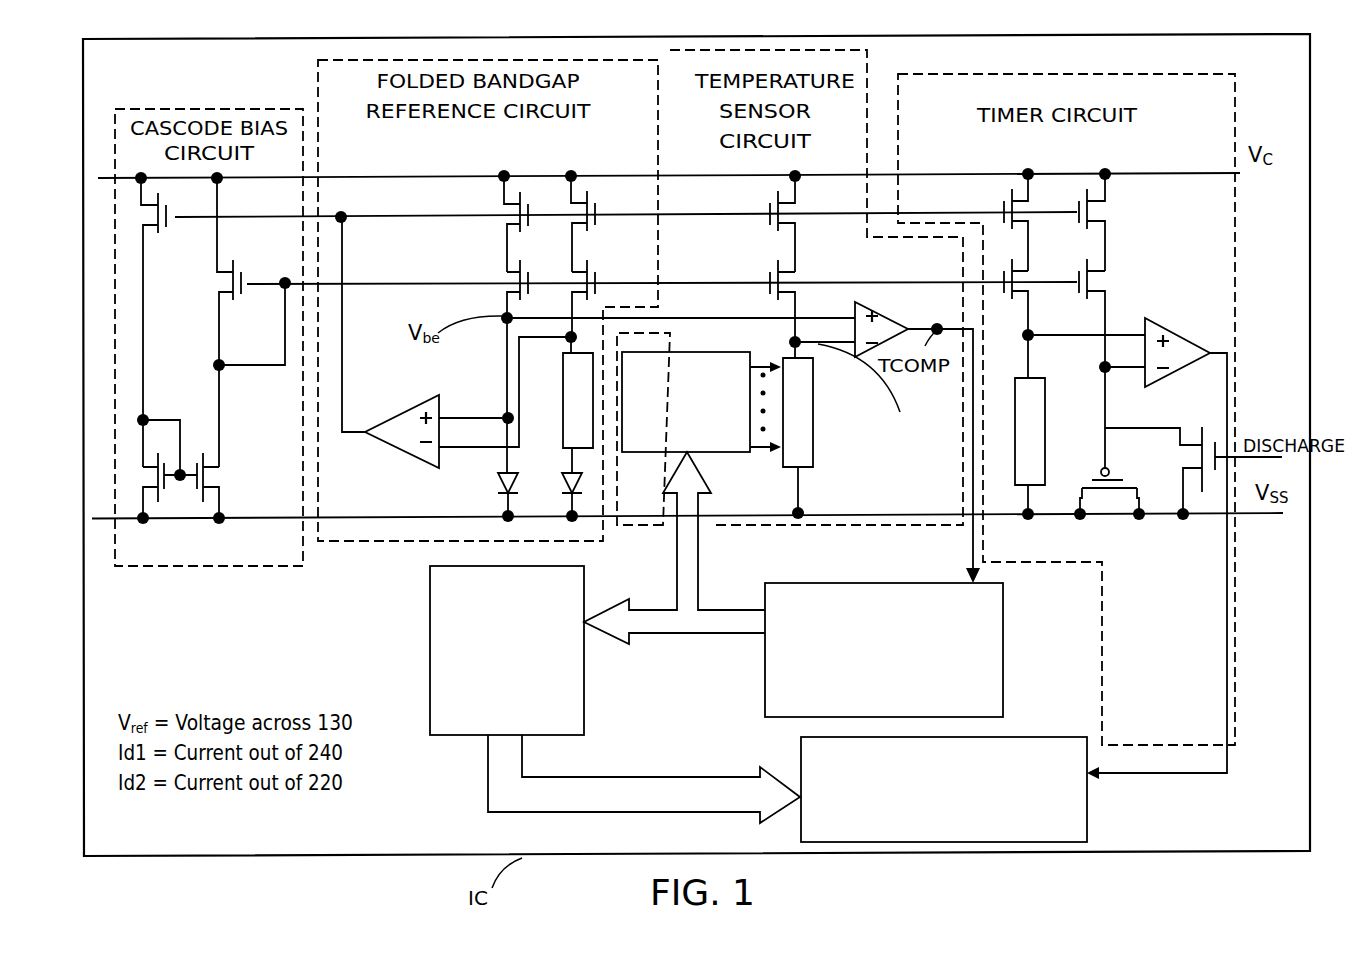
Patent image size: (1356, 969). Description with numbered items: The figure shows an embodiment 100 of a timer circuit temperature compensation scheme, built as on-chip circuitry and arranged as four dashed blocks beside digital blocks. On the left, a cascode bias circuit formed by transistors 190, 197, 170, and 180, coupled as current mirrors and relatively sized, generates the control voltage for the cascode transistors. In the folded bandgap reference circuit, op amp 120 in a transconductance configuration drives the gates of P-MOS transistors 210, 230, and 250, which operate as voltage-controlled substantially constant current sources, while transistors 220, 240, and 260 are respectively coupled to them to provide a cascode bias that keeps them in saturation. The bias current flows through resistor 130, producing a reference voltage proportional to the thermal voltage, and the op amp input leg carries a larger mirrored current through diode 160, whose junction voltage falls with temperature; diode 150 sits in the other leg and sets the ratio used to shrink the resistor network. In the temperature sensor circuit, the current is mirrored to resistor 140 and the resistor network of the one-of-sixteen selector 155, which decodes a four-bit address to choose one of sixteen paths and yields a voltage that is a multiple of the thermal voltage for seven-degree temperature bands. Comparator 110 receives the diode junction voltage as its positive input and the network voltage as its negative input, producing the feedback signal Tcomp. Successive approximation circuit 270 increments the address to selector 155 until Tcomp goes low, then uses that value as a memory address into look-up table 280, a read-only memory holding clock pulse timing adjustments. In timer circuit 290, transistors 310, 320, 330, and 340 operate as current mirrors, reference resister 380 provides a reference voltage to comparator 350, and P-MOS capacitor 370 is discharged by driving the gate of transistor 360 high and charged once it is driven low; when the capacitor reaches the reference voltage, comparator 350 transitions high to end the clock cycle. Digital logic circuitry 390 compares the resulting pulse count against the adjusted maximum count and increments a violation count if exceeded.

The embodiment of a timer circuit temperature compensation scheme 100 is at (443, 829).
The comparator 110 is at (880, 308).
The op amp 120 is at (392, 441).
The resistor 130 is at (562, 372).
The resistor 140 is at (813, 392).
The diode 150 is at (565, 482).
The 1-of-16 selector 155 is at (672, 433).
The diode 160 is at (500, 482).
The transistor 170 is at (216, 462).
The transistor 180 is at (147, 487).
The transistor 190 is at (150, 228).
The transistor 197 is at (223, 273).
The transistor 210 is at (510, 228).
The transistor 220 is at (512, 270).
The transistor 230 is at (577, 207).
The transistor 240 is at (577, 275).
The transistor 250 is at (787, 228).
The transistor 260 is at (790, 300).
The successive approximation circuit 270 is at (795, 583).
The look-up table 280 is at (430, 597).
The timer circuit 290 is at (1115, 74).
The transistor 310 is at (1020, 202).
The transistor 320 is at (1088, 200).
The transistor 330 is at (1013, 273).
The transistor 340 is at (1097, 292).
The comparator 350 is at (1170, 330).
The transistor 360 is at (1198, 472).
The P-MOS capacitor 370 is at (1082, 500).
The reference resister 380 is at (1045, 417).
The digital logic circuitry 390 is at (926, 831).